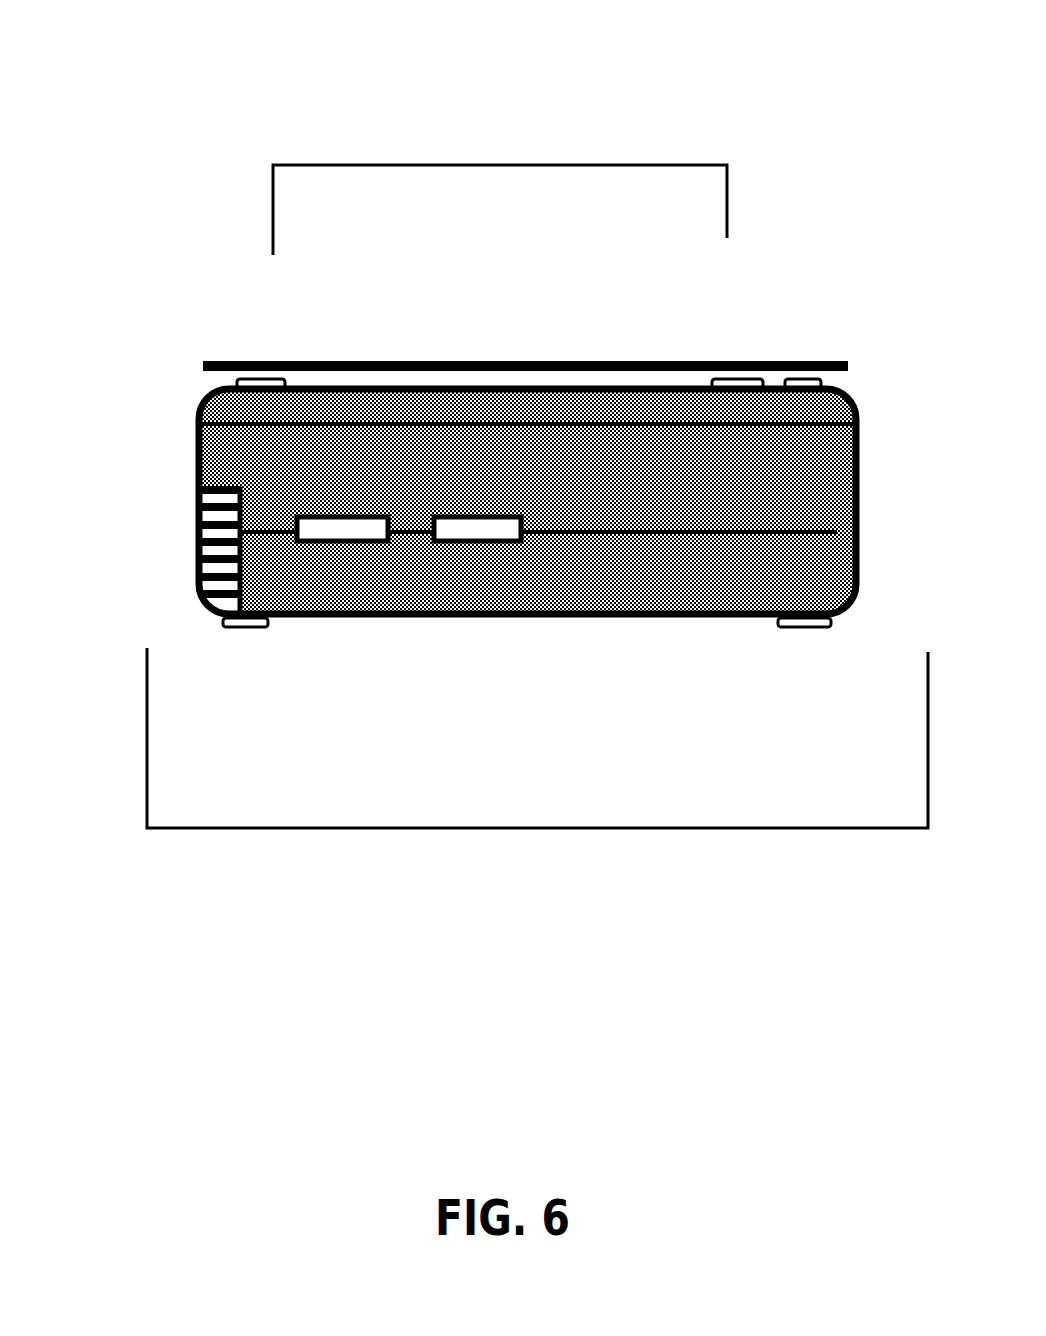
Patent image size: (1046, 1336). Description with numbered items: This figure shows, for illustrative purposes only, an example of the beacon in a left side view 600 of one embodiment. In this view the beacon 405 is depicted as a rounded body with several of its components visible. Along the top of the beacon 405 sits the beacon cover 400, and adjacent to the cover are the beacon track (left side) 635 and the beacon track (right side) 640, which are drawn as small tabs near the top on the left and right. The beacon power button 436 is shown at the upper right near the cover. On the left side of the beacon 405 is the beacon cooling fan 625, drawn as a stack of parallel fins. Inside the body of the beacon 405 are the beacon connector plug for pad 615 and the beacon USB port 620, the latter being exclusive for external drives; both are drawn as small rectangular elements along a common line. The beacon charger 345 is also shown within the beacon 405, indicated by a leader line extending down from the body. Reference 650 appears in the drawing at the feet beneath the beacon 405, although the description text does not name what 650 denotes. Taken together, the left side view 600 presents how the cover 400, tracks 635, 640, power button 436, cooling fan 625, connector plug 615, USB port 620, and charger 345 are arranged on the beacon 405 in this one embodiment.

The left side view 600 is at (384, 134).
The beacon cover 400 is at (513, 361).
The beacon track (left side) 635 is at (272, 379).
The beacon track (right side) 640 is at (732, 379).
The beacon power button 436 is at (837, 387).
The beacon 405 is at (456, 501).
The beacon cooling fan 625 is at (199, 545).
The mounting feet 650 is at (222, 622).
The beacon connector plug for pad 615 is at (343, 532).
The beacon USB port 620 is at (473, 532).
The beacon charger 345 is at (660, 497).